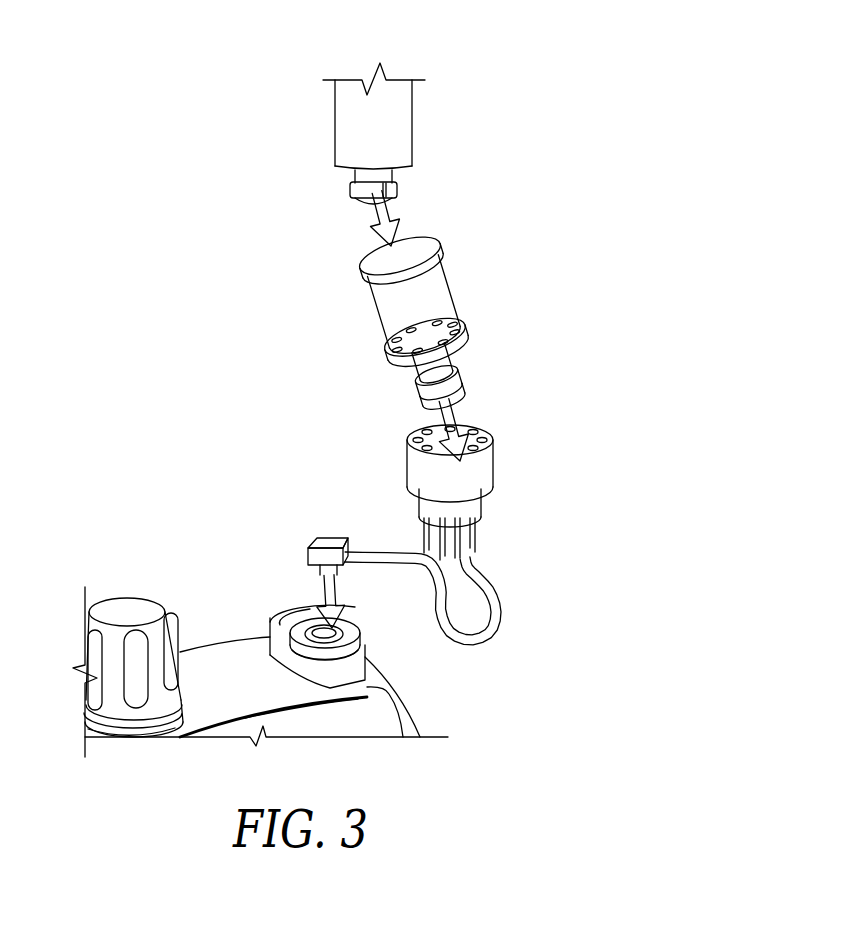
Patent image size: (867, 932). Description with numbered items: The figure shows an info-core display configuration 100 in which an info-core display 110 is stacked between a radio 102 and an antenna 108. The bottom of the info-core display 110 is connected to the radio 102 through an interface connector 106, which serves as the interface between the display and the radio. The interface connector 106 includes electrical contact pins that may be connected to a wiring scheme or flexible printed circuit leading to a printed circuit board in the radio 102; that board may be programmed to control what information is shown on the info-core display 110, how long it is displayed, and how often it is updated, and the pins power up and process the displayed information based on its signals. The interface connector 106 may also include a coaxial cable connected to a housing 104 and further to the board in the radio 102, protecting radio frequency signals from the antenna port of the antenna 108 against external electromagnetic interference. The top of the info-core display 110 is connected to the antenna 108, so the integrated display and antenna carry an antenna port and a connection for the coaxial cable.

The info-core display configuration 100 is at (547, 41).
The radio 102 is at (208, 646).
The housing 104 is at (334, 544).
The interface connector 106 is at (404, 476).
The antenna 108 is at (327, 150).
The info-core display 110 is at (382, 345).